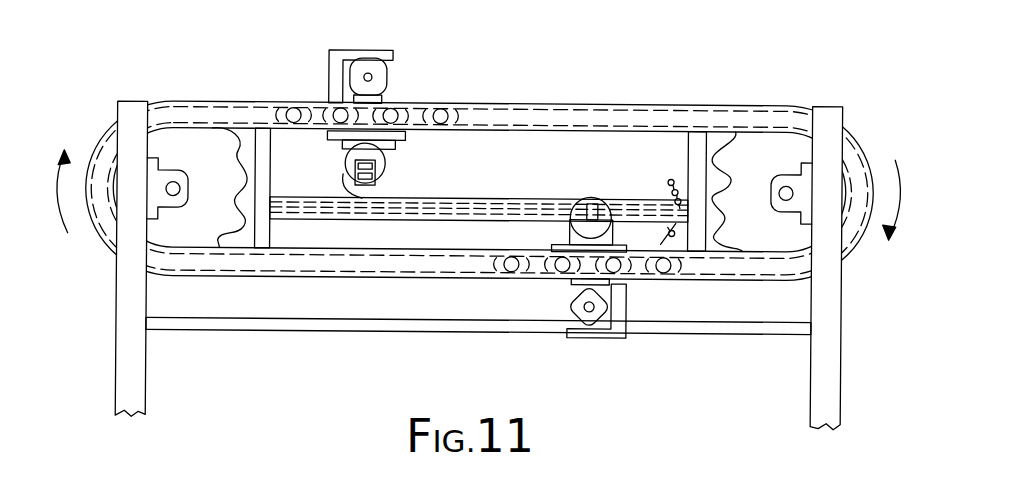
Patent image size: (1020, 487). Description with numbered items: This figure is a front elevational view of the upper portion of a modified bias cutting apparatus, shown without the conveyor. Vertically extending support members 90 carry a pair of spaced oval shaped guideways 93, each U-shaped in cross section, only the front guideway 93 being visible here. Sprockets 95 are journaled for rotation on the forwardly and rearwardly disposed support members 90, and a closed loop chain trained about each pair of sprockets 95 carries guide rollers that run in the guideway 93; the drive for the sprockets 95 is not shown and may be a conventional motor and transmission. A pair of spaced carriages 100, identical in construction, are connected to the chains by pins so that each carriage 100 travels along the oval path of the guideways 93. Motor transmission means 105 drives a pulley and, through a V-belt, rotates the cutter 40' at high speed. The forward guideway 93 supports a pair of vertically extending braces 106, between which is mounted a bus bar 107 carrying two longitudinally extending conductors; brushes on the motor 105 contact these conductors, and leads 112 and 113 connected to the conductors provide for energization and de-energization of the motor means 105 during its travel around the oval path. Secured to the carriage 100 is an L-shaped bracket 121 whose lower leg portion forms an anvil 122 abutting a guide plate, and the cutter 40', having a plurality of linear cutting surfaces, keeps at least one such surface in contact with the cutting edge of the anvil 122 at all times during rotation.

The cutter 40' is at (480, 180).
The support member 90 is at (122, 388).
The guideway 93 is at (645, 116).
The sprocket 95 is at (781, 150).
The carriage 100 is at (559, 235).
The motor transmission means 105 is at (343, 188).
The brace 106 is at (264, 139).
The bus bar 107 is at (430, 221).
The lead 112 is at (671, 176).
The lead 113 is at (668, 229).
The L-shaped bracket 121 is at (627, 313).
The anvil 122 is at (386, 51).